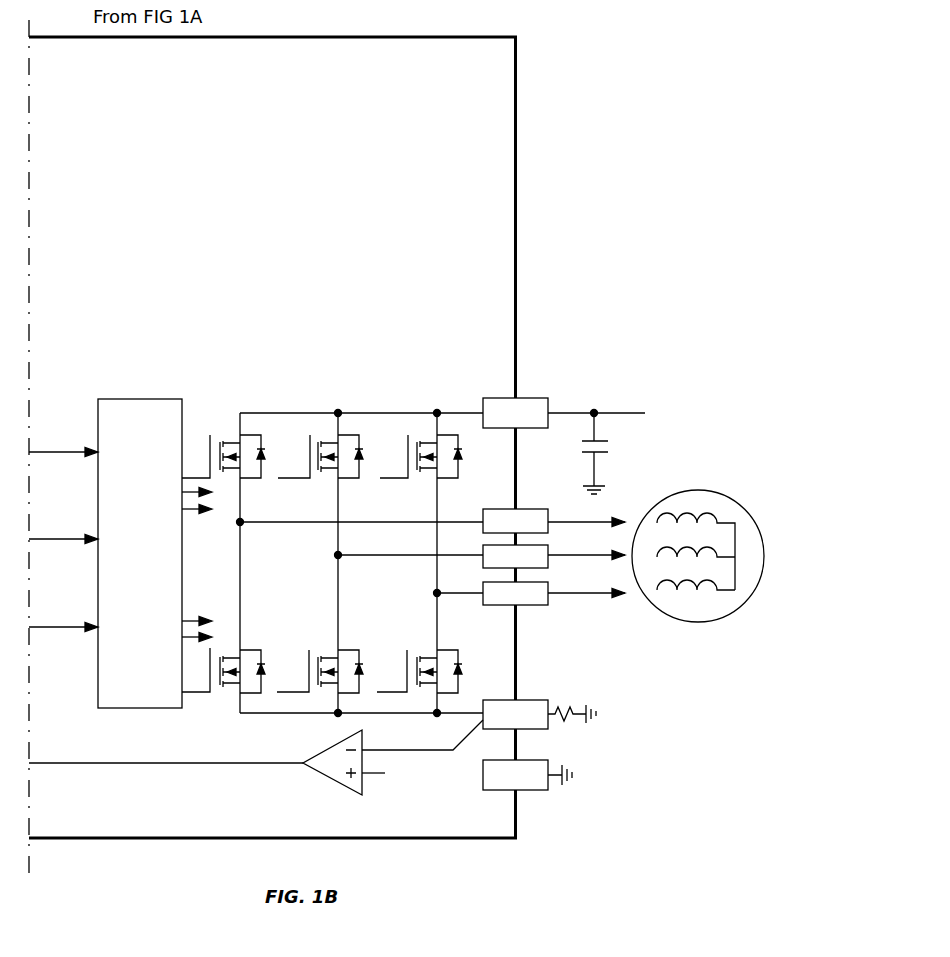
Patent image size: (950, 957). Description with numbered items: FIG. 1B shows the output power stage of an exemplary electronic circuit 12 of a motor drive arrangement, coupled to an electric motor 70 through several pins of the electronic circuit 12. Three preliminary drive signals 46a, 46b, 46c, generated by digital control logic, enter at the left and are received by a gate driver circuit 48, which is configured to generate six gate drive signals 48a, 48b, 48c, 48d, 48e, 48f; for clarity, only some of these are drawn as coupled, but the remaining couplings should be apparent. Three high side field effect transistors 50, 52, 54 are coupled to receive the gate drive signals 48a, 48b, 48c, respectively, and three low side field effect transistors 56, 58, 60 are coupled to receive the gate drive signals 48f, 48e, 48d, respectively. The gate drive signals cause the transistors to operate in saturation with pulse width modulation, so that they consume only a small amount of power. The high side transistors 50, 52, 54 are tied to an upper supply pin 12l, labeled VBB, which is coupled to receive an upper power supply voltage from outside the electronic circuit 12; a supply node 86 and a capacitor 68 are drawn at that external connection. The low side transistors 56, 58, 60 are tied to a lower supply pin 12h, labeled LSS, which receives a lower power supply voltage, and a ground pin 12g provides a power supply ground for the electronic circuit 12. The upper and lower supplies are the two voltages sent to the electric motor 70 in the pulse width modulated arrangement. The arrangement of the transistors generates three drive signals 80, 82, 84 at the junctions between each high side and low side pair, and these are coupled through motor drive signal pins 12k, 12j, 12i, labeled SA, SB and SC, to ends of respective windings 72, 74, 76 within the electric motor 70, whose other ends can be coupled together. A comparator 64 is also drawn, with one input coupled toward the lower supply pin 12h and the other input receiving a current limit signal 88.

The electronic circuit 12 is at (574, 720).
The ground pin 12g is at (535, 791).
The lower supply pin 12h is at (537, 699).
The motor drive signal pin 12i is at (535, 606).
The motor drive signal pin 12j is at (548, 547).
The motor drive signal pin 12k is at (528, 508).
The upper supply pin 12l is at (500, 398).
The preliminary drive signal 46a is at (63, 450).
The preliminary drive signal 46b is at (63, 537).
The preliminary drive signal 46c is at (63, 625).
The gate driver circuit 48 is at (165, 399).
The gate drive signal 48a is at (201, 477).
The gate drive signal 48b is at (183, 492).
The gate drive signal 48c is at (188, 512).
The gate drive signal 48d is at (190, 619).
The gate drive signal 48e is at (190, 641).
The gate drive signal 48f is at (197, 690).
The high side field effect transistor 50 is at (232, 443).
The high side field effect transistor 52 is at (337, 412).
The high side field effect transistor 54 is at (428, 441).
The low side field effect transistor 56 is at (232, 688).
The low side field effect transistor 58 is at (330, 688).
The low side field effect transistor 60 is at (429, 688).
The comparator 64 is at (333, 783).
The capacitor 68 is at (594, 463).
The electric motor 70 is at (735, 500).
The winding 72 is at (708, 512).
The winding 74 is at (712, 550).
The winding 76 is at (717, 582).
The PWM drive signal 80 is at (302, 524).
The PWM drive signal 82 is at (375, 557).
The PWM drive signal 84 is at (467, 595).
The supply voltage node 86 is at (579, 412).
The current limit input 88 is at (376, 776).